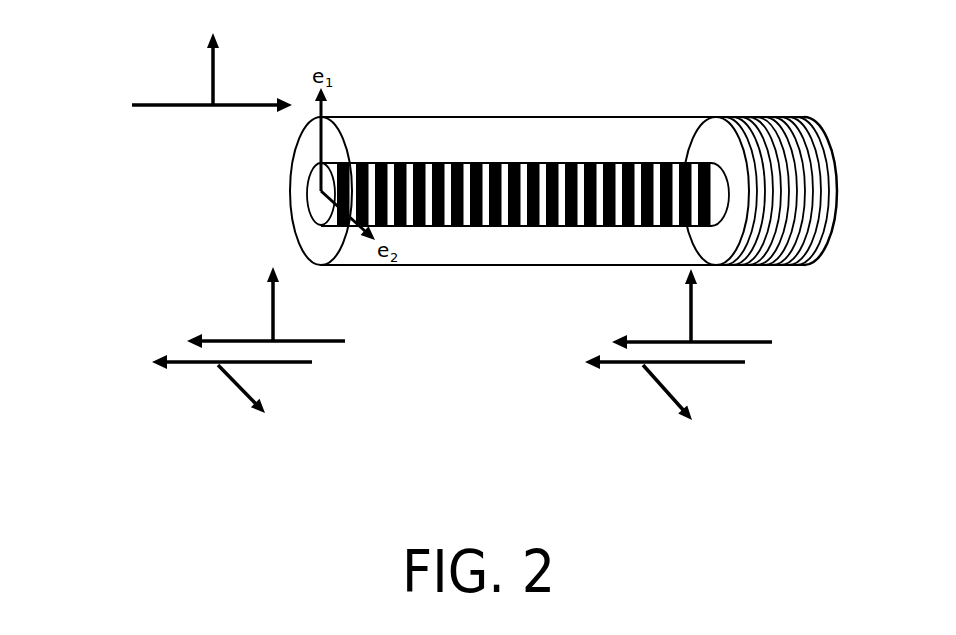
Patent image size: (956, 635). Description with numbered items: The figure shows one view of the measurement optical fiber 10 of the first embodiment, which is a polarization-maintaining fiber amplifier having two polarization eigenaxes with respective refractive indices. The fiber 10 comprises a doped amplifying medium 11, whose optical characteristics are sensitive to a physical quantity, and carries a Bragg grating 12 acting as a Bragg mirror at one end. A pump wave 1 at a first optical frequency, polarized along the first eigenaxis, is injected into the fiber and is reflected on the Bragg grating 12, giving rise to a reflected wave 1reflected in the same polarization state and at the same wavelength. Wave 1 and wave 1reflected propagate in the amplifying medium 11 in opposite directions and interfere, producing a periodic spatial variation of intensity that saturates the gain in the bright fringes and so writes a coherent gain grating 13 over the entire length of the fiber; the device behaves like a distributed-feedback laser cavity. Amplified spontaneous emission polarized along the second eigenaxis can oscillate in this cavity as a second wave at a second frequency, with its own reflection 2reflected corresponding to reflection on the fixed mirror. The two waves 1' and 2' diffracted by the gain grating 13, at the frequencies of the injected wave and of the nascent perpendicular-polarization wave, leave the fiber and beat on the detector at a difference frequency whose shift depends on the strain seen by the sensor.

The pump wave 1 is at (208, 70).
The diffracted wave 1' is at (266, 306).
The diffracted wave 2' is at (232, 395).
The reflected wave 1reflected is at (732, 341).
The reflected wave 2reflected is at (702, 367).
The measurement optical fiber 10 is at (607, 117).
The doped amplifying medium 11 is at (552, 128).
The Bragg grating 12 is at (766, 120).
The gain grating 13 is at (502, 163).